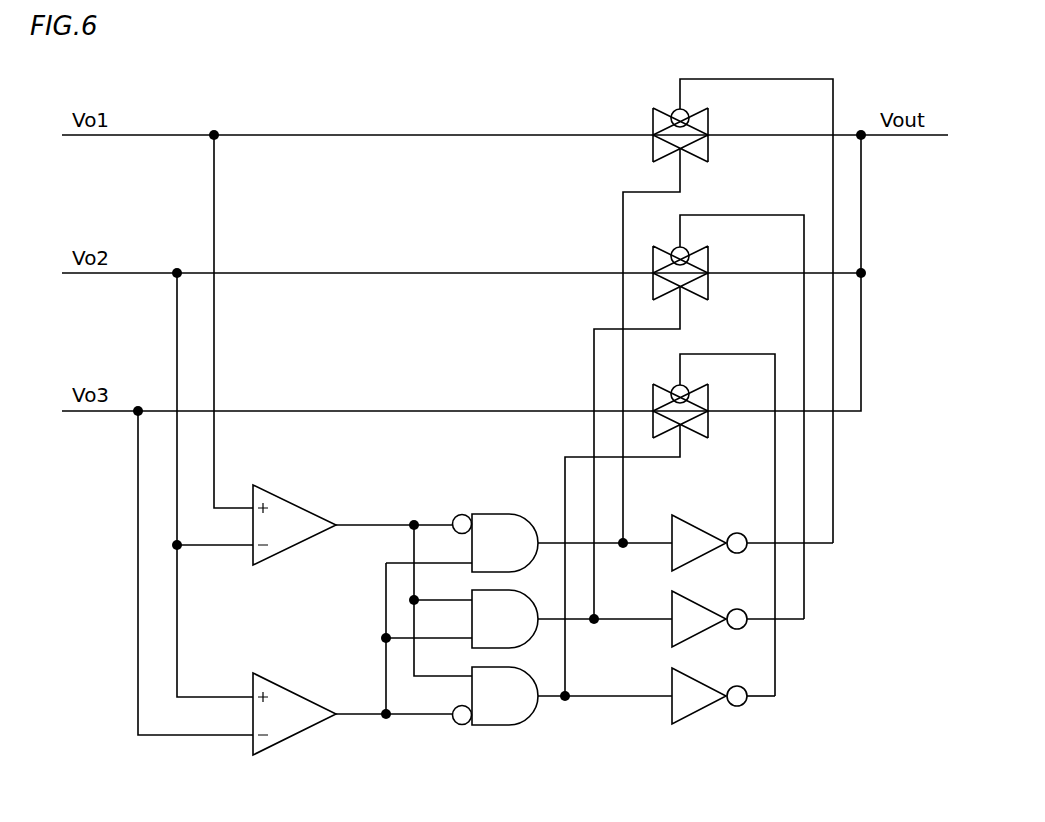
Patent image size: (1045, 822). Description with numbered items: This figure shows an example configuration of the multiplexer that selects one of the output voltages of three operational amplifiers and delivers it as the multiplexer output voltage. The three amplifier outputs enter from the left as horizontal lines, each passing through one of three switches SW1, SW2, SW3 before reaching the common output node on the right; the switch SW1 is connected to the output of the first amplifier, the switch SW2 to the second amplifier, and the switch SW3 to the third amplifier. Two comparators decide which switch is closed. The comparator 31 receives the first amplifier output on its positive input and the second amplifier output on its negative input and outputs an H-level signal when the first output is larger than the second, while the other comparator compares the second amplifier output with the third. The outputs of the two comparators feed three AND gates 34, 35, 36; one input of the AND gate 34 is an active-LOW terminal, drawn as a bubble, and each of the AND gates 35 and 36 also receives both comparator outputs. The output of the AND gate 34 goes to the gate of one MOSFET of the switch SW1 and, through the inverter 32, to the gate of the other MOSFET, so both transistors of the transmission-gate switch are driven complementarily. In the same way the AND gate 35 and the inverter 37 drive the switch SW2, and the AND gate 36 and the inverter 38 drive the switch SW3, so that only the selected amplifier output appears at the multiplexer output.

The comparator 31 is at (352, 523).
The inverter 32 is at (710, 508).
The AND gate 34 is at (492, 514).
The AND gate 35 is at (535, 636).
The AND gate 36 is at (490, 725).
The inverter 37 is at (697, 603).
The inverter 38 is at (697, 680).
The switch SW1 is at (702, 122).
The switch SW2 is at (701, 261).
The switch SW3 is at (701, 397).